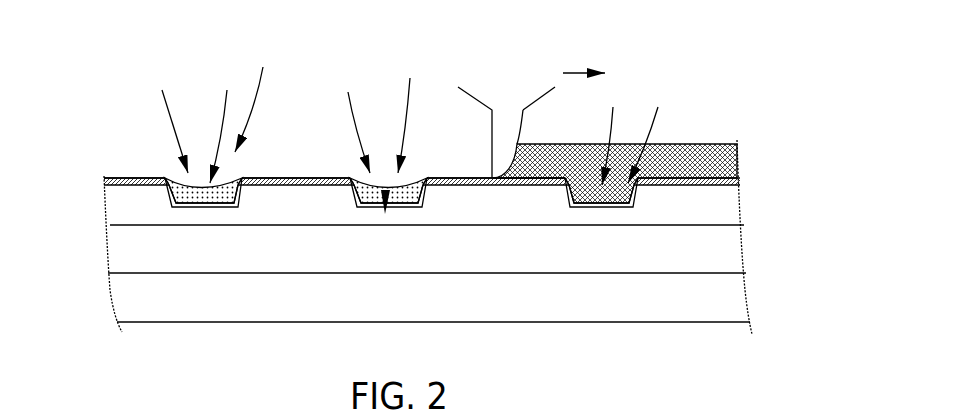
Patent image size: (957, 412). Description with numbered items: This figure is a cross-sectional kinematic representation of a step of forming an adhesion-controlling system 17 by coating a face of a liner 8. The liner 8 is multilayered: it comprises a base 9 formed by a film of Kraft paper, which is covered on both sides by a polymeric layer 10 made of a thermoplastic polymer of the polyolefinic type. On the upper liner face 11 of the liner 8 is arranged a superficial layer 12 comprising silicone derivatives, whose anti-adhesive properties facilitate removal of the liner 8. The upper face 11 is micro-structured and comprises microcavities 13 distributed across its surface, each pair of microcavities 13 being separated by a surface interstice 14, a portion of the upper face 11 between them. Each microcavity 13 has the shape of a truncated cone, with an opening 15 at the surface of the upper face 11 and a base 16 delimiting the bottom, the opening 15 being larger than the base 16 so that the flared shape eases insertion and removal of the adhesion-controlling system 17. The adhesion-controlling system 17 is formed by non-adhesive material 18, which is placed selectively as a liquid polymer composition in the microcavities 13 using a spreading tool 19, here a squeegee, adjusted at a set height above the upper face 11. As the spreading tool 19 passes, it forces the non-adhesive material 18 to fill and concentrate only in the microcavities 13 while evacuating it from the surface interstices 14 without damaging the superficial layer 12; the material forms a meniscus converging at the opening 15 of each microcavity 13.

The liner 8 is at (817, 182).
The base 9 is at (715, 248).
The polymeric layer 10 is at (715, 207).
The upper liner face 11 is at (130, 177).
The superficial layer 12 is at (738, 183).
The microcavities 13 is at (412, 125).
The surface interstice 14 is at (297, 180).
The opening 15 is at (418, 126).
The base 16 is at (205, 205).
The adhesion-controlling system 17 is at (327, 107).
The non-adhesive material 18 is at (185, 193).
The spreading tool 19 is at (478, 100).